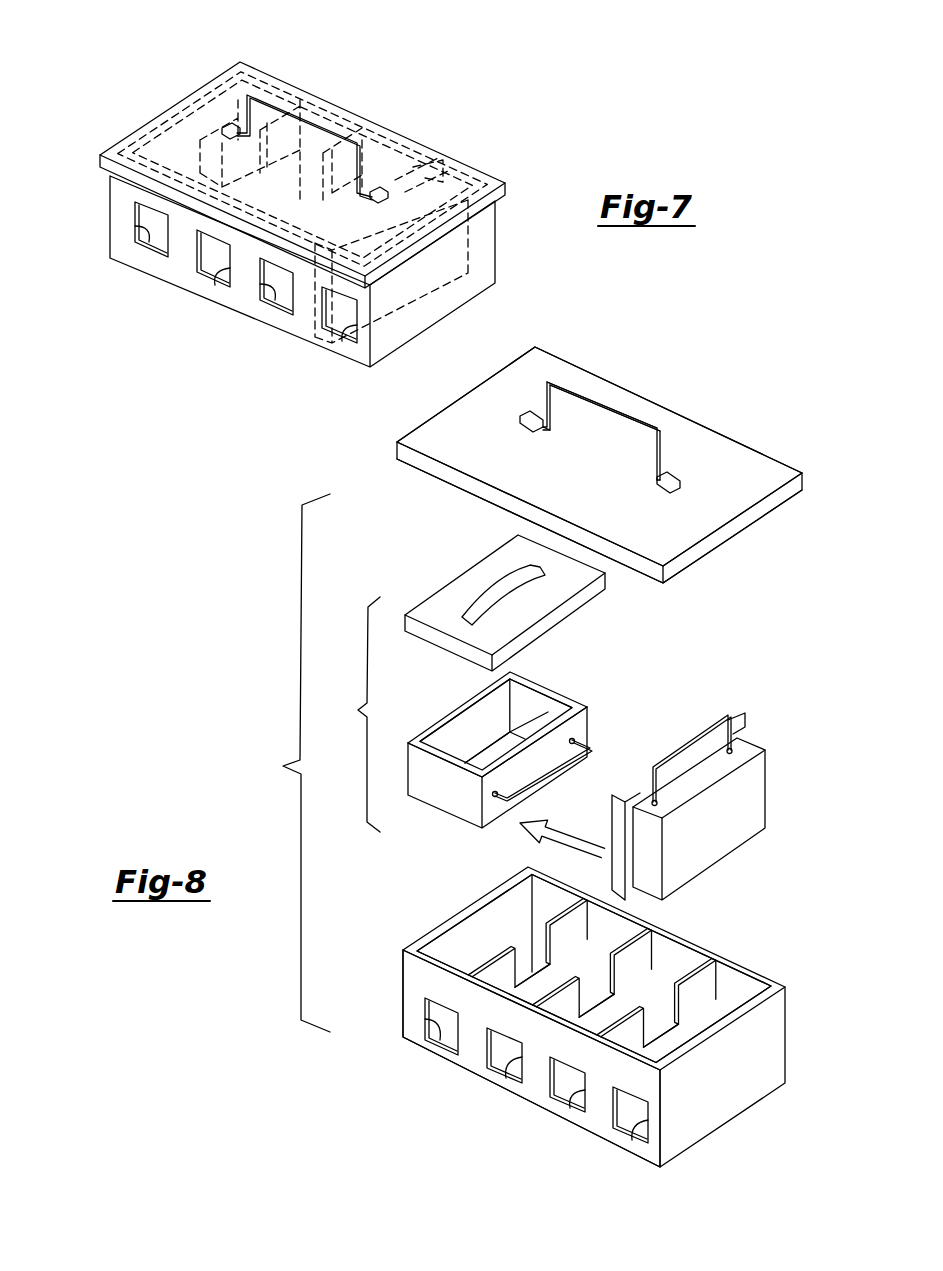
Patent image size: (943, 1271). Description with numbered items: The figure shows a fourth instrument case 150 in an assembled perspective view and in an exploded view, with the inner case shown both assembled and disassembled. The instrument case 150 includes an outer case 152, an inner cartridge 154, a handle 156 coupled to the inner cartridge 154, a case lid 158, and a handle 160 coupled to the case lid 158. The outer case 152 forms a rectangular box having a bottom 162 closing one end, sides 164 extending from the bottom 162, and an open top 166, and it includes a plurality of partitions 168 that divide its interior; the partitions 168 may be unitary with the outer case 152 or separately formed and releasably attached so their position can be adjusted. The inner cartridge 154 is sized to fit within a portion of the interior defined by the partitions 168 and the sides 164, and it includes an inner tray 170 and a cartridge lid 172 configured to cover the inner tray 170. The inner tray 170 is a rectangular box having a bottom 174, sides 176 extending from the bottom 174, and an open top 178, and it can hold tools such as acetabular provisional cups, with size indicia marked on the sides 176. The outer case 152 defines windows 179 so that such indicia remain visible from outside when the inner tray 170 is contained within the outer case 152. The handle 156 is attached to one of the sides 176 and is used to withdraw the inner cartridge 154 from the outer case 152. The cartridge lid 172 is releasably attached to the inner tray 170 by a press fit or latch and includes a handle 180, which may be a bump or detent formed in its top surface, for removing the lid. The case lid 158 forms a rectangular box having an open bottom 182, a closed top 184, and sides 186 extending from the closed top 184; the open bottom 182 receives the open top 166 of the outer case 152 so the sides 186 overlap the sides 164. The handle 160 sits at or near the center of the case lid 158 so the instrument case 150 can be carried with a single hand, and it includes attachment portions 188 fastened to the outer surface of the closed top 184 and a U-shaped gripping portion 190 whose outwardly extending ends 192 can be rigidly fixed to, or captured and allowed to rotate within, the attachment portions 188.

In FIG. 7, the instrument case 150 is at (162, 66).
In FIG. 8, the instrument case 150 is at (283, 767).
In FIG. 7, the outer case 152 is at (187, 262).
In FIG. 8, the outer case 152 is at (470, 1065).
In FIG. 7, the inner cartridge 154 is at (484, 258).
In FIG. 8, the inner cartridge 154 is at (358, 710).
In FIG. 7, the handle 156 is at (445, 163).
In FIG. 8, the handle 156 is at (675, 740).
In FIG. 7, the case lid 158 is at (160, 133).
In FIG. 8, the case lid 158 is at (428, 432).
In FIG. 7, the handle 160 is at (322, 122).
In FIG. 8, the handle 160 is at (567, 425).
In FIG. 8, the bottom 162 is at (658, 1035).
In FIG. 8, the sides 164 is at (498, 944).
In FIG. 8, the open top 166 is at (655, 975).
In FIG. 7, the partitions 168 is at (240, 185).
In FIG. 8, the partitions 168 is at (500, 980).
In FIG. 8, the inner tray 170 is at (462, 810).
In FIG. 8, the cartridge lid 172 is at (430, 607).
In FIG. 8, the bottom 174 is at (512, 735).
In FIG. 8, the sides 176 is at (548, 712).
In FIG. 8, the open top 178 is at (488, 712).
In FIG. 7, the windows 179 is at (140, 252).
In FIG. 8, the windows 179 is at (433, 1040).
In FIG. 8, the handle 180 is at (492, 590).
In FIG. 8, the open bottom 182 is at (600, 455).
In FIG. 8, the closed top 184 is at (738, 490).
In FIG. 8, the sides 186 is at (484, 376).
In FIG. 8, the attachment portions 188 is at (518, 421).
In FIG. 8, the gripping portion 190 is at (600, 400).
In FIG. 8, the ends 192 is at (537, 432).